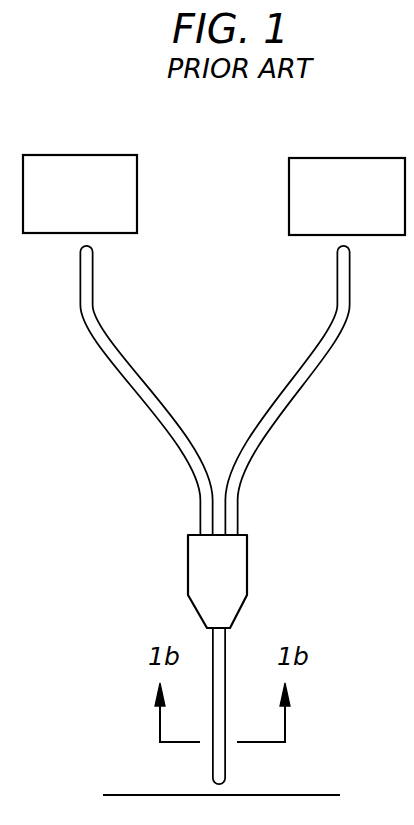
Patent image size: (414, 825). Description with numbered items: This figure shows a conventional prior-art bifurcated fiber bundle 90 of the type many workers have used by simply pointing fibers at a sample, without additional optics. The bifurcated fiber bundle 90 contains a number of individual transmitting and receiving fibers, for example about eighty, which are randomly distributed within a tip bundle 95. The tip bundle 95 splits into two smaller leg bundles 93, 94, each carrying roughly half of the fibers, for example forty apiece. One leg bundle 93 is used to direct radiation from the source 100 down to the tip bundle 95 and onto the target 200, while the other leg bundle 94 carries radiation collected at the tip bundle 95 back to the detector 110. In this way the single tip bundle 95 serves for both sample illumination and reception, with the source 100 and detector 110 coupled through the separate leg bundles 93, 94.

The source 100 is at (87, 155).
The detector 110 is at (352, 158).
The bifurcated fiber bundle 90 is at (249, 515).
The leg bundle 93 is at (121, 378).
The leg bundle 94 is at (338, 342).
The tip bundle 95 is at (228, 660).
The target 200 is at (308, 795).